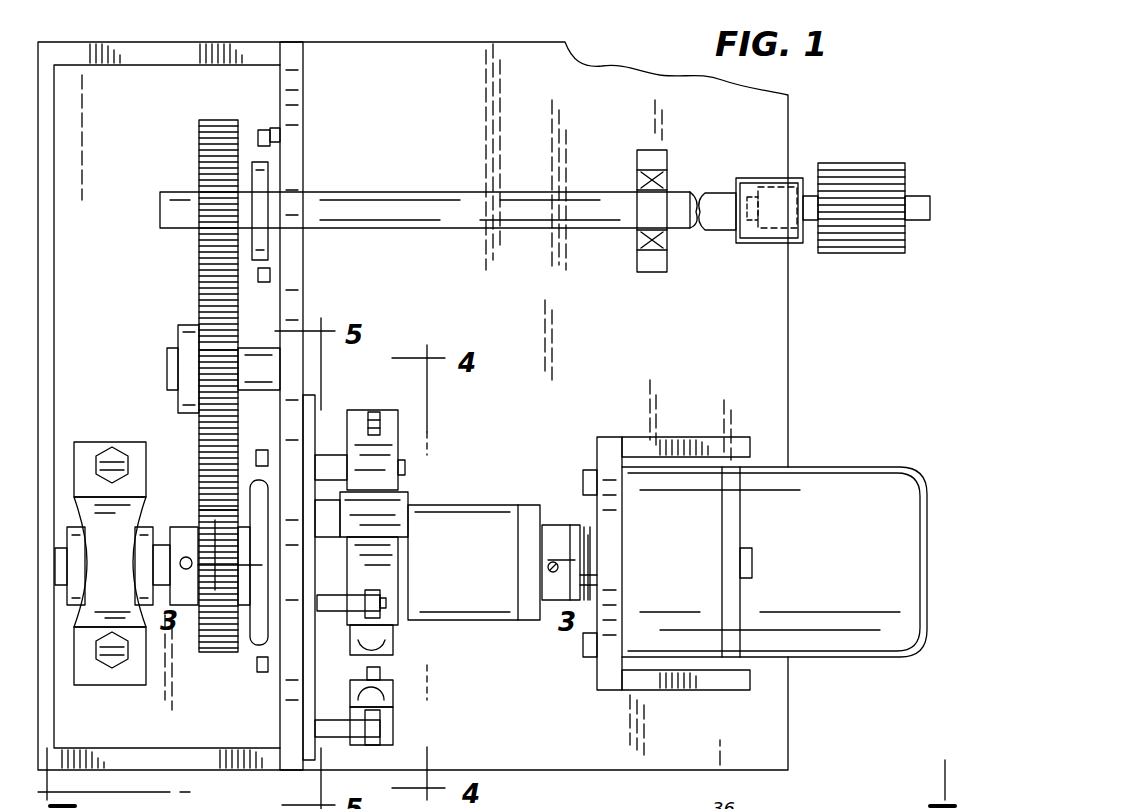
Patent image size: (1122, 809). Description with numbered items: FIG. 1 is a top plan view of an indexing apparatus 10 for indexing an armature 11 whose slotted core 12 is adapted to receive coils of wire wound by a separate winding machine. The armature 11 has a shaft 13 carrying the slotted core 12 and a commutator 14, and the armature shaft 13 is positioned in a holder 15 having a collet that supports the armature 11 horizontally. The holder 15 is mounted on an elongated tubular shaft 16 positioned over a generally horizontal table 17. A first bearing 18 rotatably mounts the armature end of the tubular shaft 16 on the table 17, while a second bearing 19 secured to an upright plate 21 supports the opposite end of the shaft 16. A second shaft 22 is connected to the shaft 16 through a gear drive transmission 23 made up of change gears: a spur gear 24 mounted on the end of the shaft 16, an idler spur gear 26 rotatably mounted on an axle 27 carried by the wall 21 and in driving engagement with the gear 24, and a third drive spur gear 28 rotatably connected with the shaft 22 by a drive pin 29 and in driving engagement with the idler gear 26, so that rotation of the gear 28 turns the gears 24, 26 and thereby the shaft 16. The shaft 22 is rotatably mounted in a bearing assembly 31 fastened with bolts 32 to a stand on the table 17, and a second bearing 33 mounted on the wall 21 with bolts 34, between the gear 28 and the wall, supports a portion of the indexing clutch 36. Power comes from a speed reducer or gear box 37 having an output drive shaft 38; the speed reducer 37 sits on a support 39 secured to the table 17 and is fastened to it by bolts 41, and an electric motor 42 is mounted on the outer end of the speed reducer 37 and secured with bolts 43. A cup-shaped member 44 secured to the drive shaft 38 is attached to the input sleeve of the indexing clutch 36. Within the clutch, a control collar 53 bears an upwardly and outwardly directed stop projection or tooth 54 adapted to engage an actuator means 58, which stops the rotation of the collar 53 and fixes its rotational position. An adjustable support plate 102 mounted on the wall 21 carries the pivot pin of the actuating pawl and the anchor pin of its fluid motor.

The indexing apparatus 10 is at (721, 540).
The armature 11 is at (882, 186).
The slotted core 12 is at (848, 165).
The armature shaft 13 is at (918, 222).
The commutator 14 is at (770, 190).
The holder 15 is at (760, 242).
The elongated tubular shaft 16 is at (553, 205).
The table 17 is at (627, 97).
The first bearing 18 is at (655, 162).
The second bearing 19 is at (276, 130).
The upright plate 21 is at (305, 108).
The second shaft 22 is at (65, 548).
The gear drive transmission 23 is at (193, 414).
The spur gear 24 is at (199, 145).
The idler spur gear 26 is at (199, 445).
The axle 27 is at (168, 371).
The third drive spur gear 28 is at (222, 652).
The drive pin 29 is at (186, 545).
The bearing assembly 31 is at (100, 598).
The bolts 32 is at (108, 465).
The second bearing 33 is at (270, 447).
The bolts 34 is at (255, 670).
The indexing clutch 36 is at (447, 548).
The speed reducer 37 is at (680, 485).
The output drive shaft 38 is at (597, 557).
The support 39 is at (620, 437).
The bolts 41 is at (582, 480).
The electric motor 42 is at (865, 495).
The bolts 43 is at (752, 562).
The cup-shaped member 44 is at (553, 602).
The control collar 53 is at (477, 595).
The stop projection 54 is at (474, 562).
The actuator means 58 is at (371, 404).
The adjustable support plate 102 is at (310, 672).